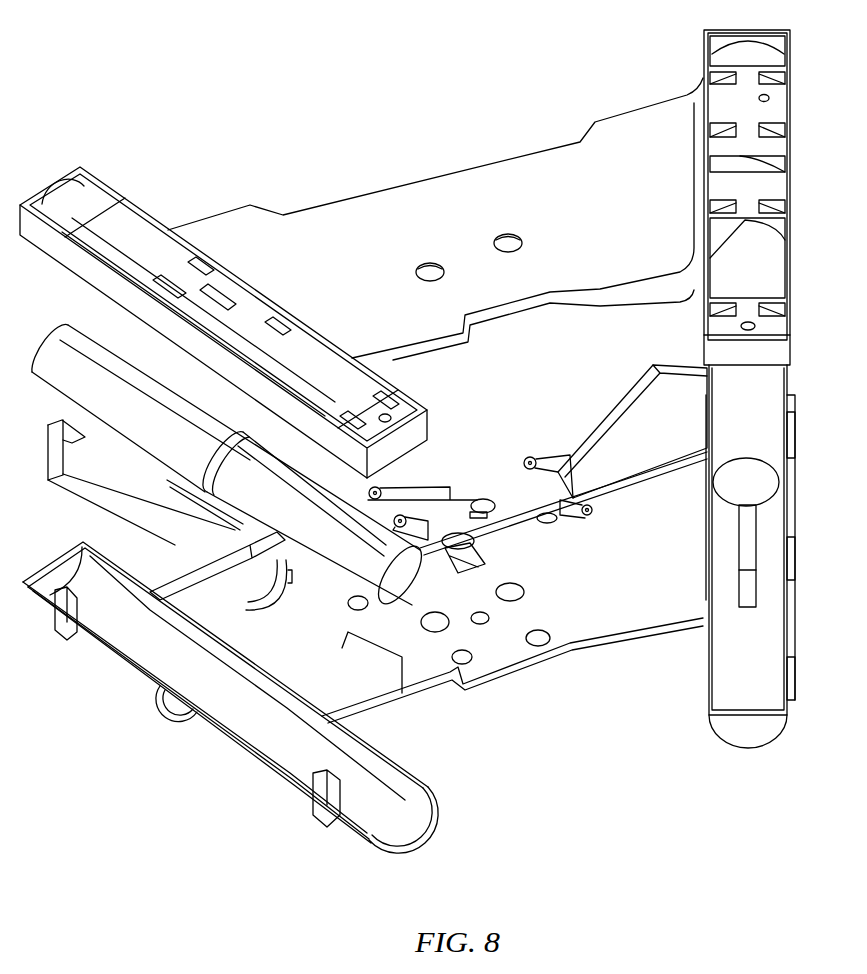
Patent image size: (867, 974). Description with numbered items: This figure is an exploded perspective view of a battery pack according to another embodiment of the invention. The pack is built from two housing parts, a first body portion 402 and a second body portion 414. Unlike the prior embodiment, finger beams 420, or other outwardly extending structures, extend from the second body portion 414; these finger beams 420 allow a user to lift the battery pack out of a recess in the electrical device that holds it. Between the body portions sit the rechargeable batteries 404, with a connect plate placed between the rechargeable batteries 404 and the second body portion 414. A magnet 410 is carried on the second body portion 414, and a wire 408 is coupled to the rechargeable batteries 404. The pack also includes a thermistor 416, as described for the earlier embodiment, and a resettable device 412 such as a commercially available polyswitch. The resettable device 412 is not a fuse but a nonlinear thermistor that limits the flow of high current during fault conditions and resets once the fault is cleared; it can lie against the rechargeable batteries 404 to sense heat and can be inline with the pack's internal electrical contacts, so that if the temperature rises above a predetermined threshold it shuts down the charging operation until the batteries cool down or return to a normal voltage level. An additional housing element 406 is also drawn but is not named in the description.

The first body portion 402 is at (714, 62).
The rechargeable batteries 404 is at (700, 386).
The housing capsule 406 is at (698, 517).
The wire 408 is at (547, 521).
The magnet 410 is at (480, 566).
The resettable device 412 is at (340, 597).
The second body portion 414 is at (238, 752).
The thermistor 416 is at (217, 525).
The finger beams 420 is at (163, 722).